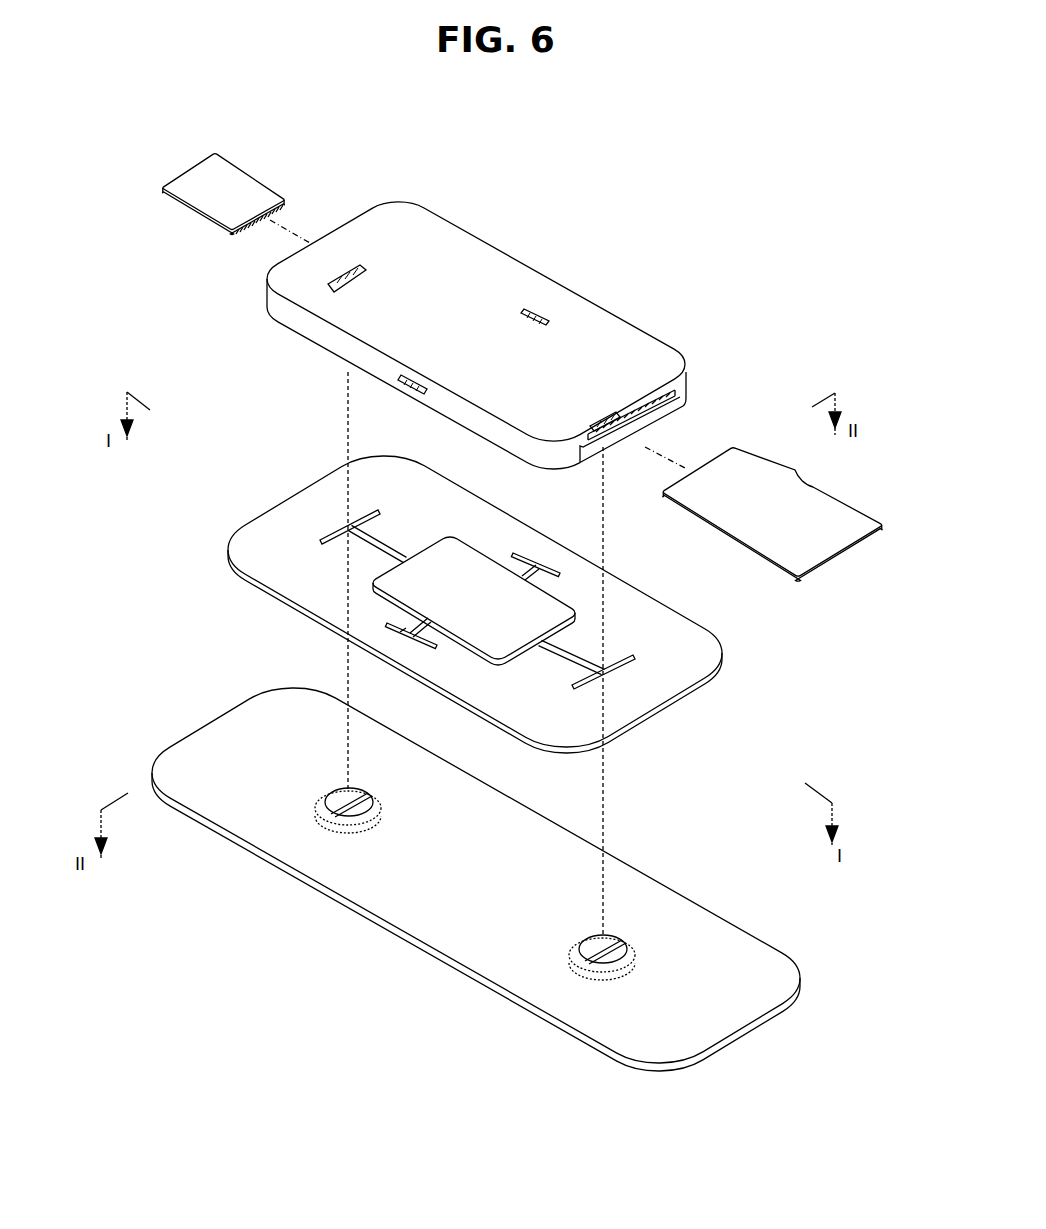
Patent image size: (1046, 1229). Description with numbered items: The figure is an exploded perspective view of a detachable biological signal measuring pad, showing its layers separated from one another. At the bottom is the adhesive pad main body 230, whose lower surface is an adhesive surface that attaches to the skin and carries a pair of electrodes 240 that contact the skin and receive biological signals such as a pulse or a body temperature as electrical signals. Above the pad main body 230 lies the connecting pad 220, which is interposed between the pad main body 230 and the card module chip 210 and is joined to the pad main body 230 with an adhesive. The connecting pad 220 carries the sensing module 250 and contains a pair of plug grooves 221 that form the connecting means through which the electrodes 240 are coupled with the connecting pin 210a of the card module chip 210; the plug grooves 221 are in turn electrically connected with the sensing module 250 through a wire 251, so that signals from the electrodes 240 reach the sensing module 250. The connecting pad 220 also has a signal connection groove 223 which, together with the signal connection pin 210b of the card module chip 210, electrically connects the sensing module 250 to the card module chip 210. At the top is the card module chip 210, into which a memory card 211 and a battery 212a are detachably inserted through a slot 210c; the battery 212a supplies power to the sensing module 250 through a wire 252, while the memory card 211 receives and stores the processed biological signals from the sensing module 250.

The card module chip 210 is at (240, 306).
The connecting pin 210a is at (363, 267).
The signal connection pin 210b is at (538, 308).
The slot 210c is at (693, 397).
The memory card 211 is at (843, 547).
The battery 212a is at (197, 172).
The connecting pad 220 is at (282, 483).
The plug groove 221 is at (622, 670).
The signal connection groove 223 is at (400, 638).
The adhesive pad main body 230 is at (190, 714).
The electrode 240 is at (337, 827).
The sensing module 250 is at (440, 553).
The wire 251 is at (355, 550).
The wire 252 is at (523, 555).